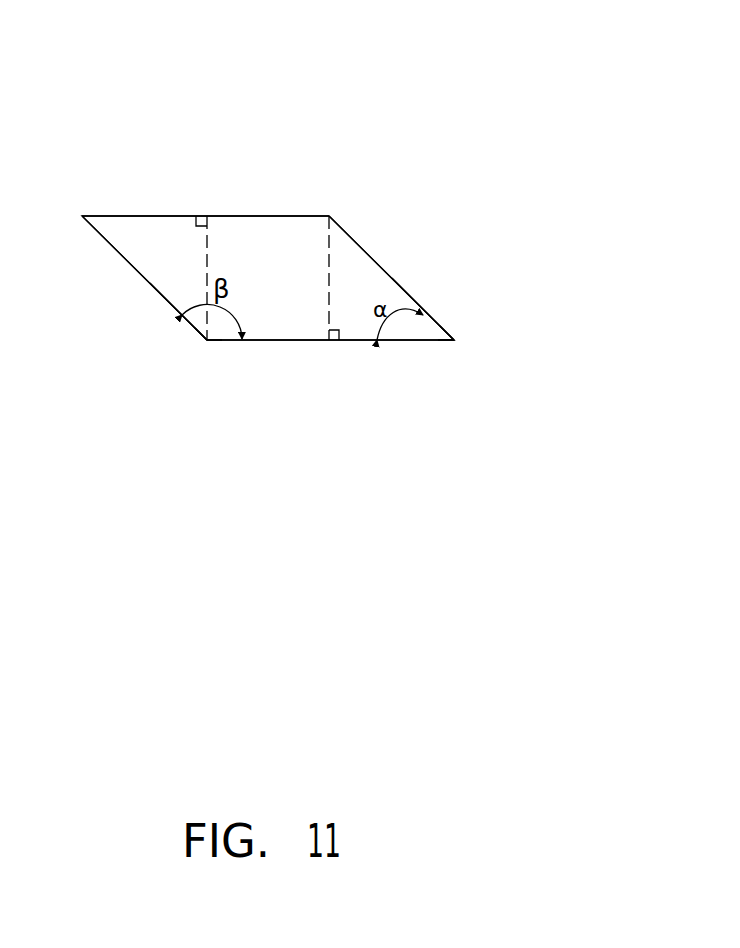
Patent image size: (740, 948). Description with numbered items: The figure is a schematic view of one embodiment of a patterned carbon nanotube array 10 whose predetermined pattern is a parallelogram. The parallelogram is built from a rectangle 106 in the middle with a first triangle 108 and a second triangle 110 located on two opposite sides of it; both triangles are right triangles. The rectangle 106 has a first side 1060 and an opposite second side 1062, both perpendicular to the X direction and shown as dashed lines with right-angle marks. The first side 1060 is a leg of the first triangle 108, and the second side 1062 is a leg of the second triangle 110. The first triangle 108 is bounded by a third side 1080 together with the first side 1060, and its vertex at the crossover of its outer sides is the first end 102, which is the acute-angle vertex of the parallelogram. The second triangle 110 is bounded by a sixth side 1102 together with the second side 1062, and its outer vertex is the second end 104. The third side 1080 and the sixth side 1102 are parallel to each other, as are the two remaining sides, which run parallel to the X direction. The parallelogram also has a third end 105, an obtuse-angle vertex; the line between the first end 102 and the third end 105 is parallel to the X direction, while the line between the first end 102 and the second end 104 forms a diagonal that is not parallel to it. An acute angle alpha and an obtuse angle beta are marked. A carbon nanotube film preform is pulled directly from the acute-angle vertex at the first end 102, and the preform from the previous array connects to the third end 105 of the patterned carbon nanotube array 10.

The first patterned carbon nanotube array 10 is at (267, 66).
The first end 102 is at (454, 340).
The second end 104 is at (80, 215).
The third end 105 is at (207, 340).
The rectangle 106 is at (275, 323).
The first triangle 108 is at (385, 291).
The third side 1080 is at (437, 320).
The second triangle 110 is at (152, 268).
The sixth side 1102 is at (190, 323).
The first side 1060 is at (329, 267).
The second side 1062 is at (207, 268).